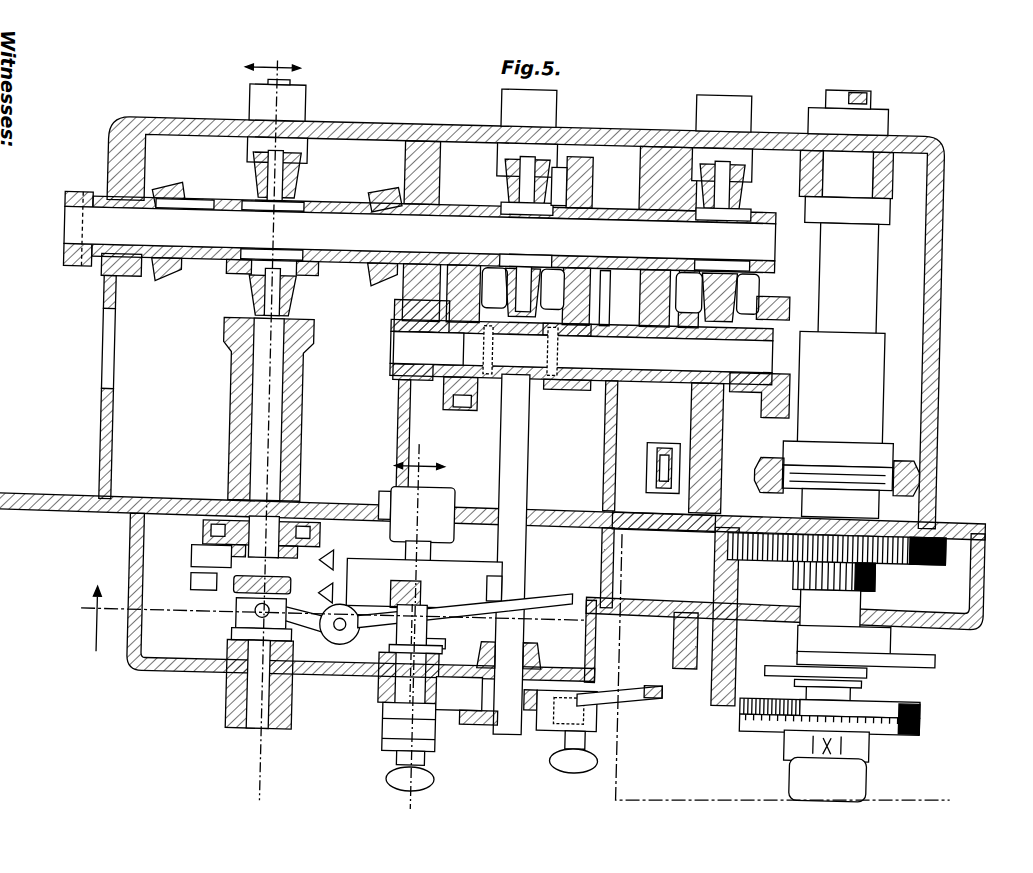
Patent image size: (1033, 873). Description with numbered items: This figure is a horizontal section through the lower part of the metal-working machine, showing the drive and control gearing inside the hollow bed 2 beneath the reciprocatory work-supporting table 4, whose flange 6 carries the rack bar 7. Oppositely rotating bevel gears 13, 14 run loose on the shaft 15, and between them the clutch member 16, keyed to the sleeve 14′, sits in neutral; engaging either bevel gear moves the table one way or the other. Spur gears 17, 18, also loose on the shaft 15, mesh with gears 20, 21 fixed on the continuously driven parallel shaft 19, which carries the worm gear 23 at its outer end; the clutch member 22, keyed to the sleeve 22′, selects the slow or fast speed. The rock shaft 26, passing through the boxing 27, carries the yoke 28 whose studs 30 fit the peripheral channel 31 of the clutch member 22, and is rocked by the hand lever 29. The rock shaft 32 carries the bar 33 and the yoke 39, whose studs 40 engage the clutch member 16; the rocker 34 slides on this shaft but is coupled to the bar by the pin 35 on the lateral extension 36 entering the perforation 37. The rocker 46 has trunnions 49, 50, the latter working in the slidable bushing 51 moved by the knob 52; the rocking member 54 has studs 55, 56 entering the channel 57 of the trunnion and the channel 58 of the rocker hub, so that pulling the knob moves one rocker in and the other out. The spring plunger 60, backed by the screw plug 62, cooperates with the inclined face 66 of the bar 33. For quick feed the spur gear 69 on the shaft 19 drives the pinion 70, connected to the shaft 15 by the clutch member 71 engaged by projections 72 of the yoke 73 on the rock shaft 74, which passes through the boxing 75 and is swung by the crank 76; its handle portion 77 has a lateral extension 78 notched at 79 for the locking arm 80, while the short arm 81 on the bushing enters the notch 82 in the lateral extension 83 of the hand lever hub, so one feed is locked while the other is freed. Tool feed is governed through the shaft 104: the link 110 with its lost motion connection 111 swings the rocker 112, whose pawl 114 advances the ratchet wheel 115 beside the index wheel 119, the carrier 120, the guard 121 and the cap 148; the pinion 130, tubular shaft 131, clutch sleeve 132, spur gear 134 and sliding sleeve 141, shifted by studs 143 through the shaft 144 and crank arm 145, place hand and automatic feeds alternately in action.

The base or bed 2 is at (937, 240).
The work-supporting table 4 is at (512, 668).
The flange 6 is at (264, 416).
The rack bar 7 is at (415, 629).
The bevel gear 13 is at (372, 190).
The bevel gear 14 is at (178, 192).
The sleeve 14′ is at (218, 209).
The shaft 15 is at (419, 236).
The clutch member 16 is at (285, 208).
The spur gear 17 is at (430, 205).
The spur gear 18 is at (573, 200).
The shaft 19 is at (581, 351).
The spur gear 20 is at (440, 328).
The spur gear 21 is at (560, 382).
The clutch member 22 is at (521, 210).
The sleeve 22′ is at (575, 252).
The worm gear 23 is at (773, 295).
The rock shaft 26 is at (515, 540).
The boxing or housing 27 is at (150, 668).
The yoke 28 is at (505, 185).
The hand lever 29 is at (498, 728).
The studs 30 is at (520, 170).
The peripheral channel 31 is at (550, 165).
The rock shaft 32 is at (250, 725).
The bar 33 is at (196, 556).
The rocker 34 is at (240, 585).
The pin 35 is at (196, 580).
The lateral extension 36 is at (220, 585).
The perforation 37 is at (210, 536).
The yoke 39 is at (230, 290).
The studs 40 is at (292, 175).
The rocker 46 is at (445, 575).
The trunnion 49 is at (433, 545).
The trunnion 50 is at (400, 668).
The bushing 51 is at (392, 720).
The knob 52 is at (398, 770).
The rocking member 54 is at (345, 642).
The stud 55 is at (490, 603).
The stud 56 is at (262, 612).
The peripheral channel 57 is at (445, 640).
The channel 58 is at (265, 640).
The spring plunger 60 is at (390, 590).
The screw plug 62 is at (500, 580).
The inclined face 66 is at (385, 520).
The spur gear 69 is at (647, 445).
The pinion 70 is at (658, 185).
The clutch member 71 is at (718, 209).
The projections 72 is at (722, 178).
The yoke 73 is at (738, 180).
The rock shaft 74 is at (705, 575).
The boxing 75 is at (698, 595).
The hand lever or crank 76 is at (725, 690).
The handle portion 77 is at (600, 698).
The lateral extension 78 is at (570, 740).
The notch 79 is at (562, 690).
The locking arm 80 is at (582, 765).
The short arm 81 is at (432, 752).
The notch 82 is at (459, 694).
The lateral extension 83 is at (482, 720).
The shaft 104 is at (835, 85).
The link 110 is at (790, 657).
The lost motion connection 111 is at (870, 668).
The rocker 112 is at (940, 644).
The pawl 114 is at (926, 690).
The ratchet wheel 115 is at (926, 710).
The index wheel 119 is at (920, 716).
The carrier 120 is at (876, 735).
The guard 121 is at (780, 716).
The pinion 130 is at (878, 565).
The tubular shaft 131 is at (840, 228).
The clutch sleeve 132 is at (841, 390).
The spur gear 134 is at (905, 547).
The sleeve 141 is at (880, 440).
The studs 143 is at (912, 462).
The shaft 144 is at (650, 475).
The crank arm 145 is at (650, 460).
The cap 148 is at (828, 779).